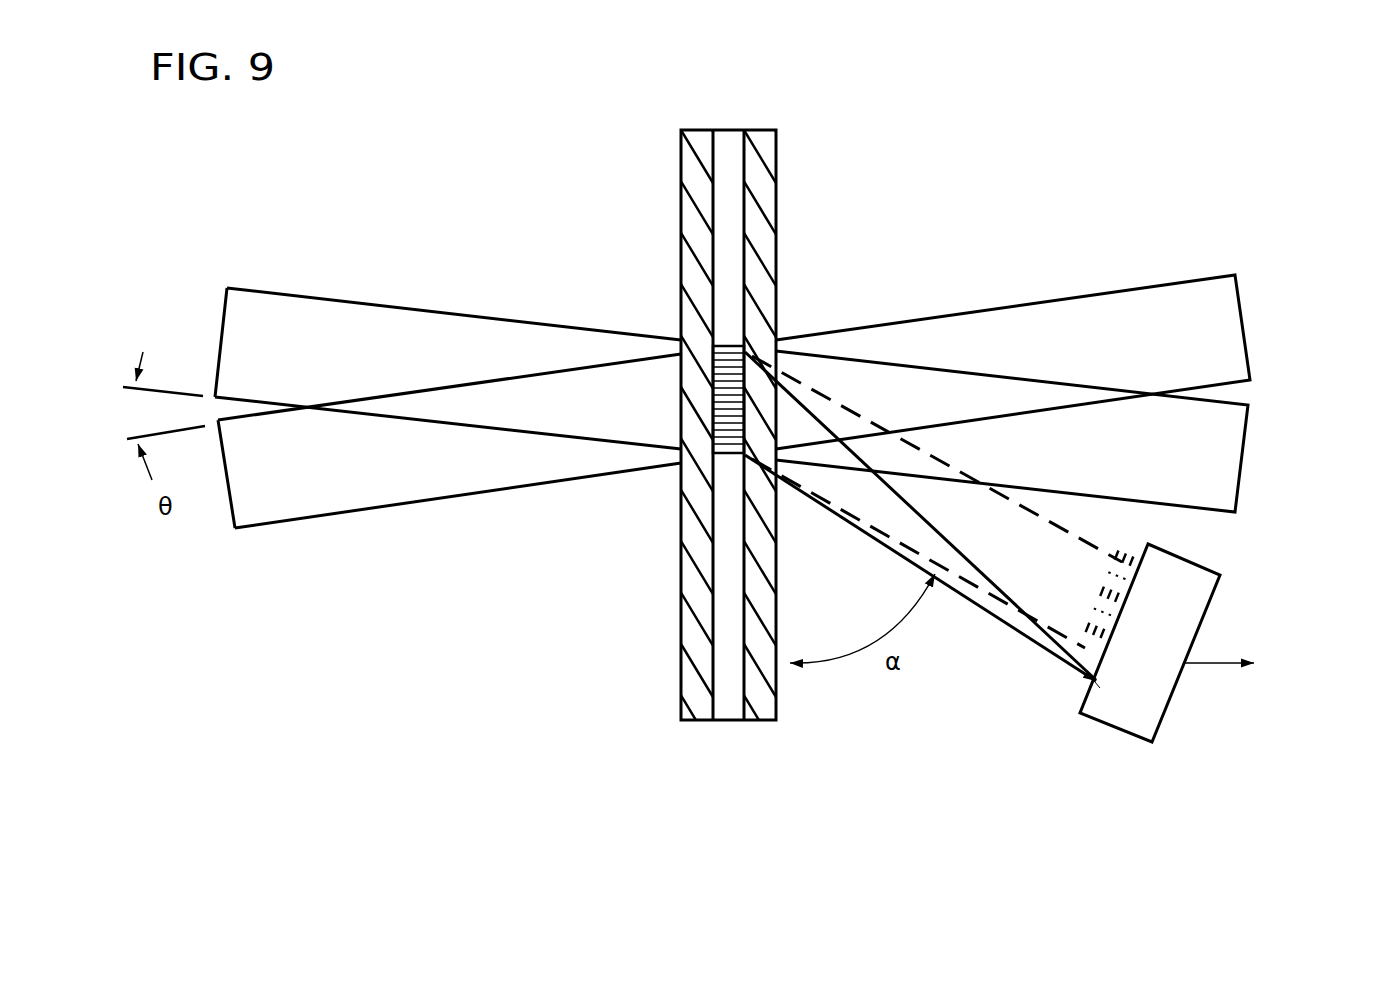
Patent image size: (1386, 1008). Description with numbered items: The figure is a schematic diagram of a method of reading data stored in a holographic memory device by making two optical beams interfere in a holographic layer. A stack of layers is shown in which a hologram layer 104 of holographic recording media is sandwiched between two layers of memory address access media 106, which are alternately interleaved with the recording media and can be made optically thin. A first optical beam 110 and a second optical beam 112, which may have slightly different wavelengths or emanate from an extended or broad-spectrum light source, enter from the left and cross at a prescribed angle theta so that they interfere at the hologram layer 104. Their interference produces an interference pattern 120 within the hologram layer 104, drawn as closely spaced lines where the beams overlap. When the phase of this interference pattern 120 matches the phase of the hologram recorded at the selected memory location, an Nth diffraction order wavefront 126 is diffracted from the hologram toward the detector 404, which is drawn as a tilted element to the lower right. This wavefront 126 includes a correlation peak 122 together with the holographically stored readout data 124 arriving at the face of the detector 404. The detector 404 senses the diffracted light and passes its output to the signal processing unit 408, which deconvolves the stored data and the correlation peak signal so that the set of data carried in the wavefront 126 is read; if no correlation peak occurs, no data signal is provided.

The memory address access media 106 is at (683, 131).
The holographic recording media 104 is at (729, 129).
The interference pattern 120 is at (729, 341).
The second optical beam 112 is at (317, 303).
The first optical beam 110 is at (328, 510).
The Nth diffraction order wavefront 126 is at (1042, 650).
The correlation peak 122 is at (1092, 686).
The readout data 124 is at (1123, 551).
The optical detector 404 is at (1167, 712).
The signal processing unit 408 is at (1264, 665).